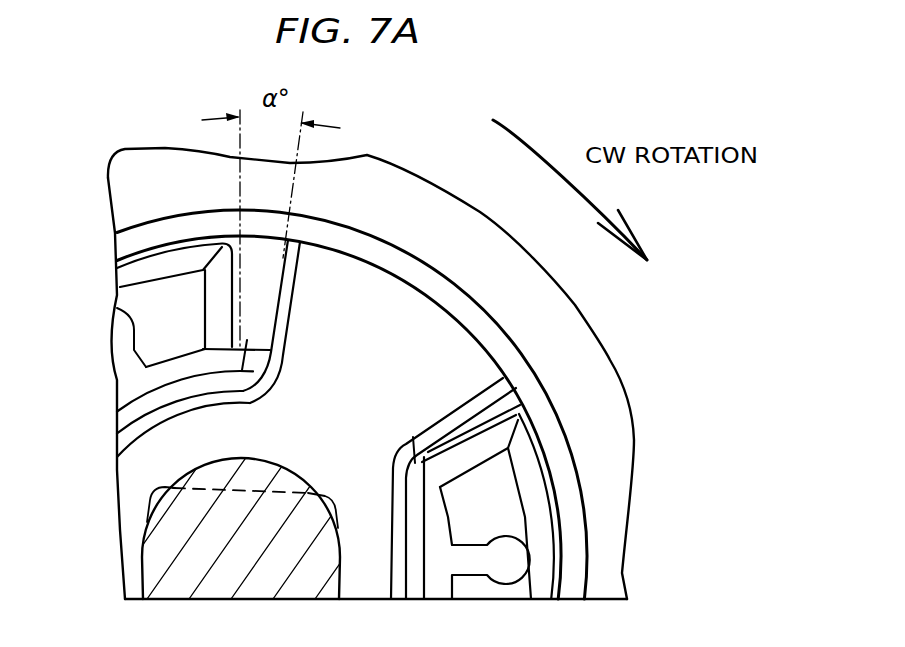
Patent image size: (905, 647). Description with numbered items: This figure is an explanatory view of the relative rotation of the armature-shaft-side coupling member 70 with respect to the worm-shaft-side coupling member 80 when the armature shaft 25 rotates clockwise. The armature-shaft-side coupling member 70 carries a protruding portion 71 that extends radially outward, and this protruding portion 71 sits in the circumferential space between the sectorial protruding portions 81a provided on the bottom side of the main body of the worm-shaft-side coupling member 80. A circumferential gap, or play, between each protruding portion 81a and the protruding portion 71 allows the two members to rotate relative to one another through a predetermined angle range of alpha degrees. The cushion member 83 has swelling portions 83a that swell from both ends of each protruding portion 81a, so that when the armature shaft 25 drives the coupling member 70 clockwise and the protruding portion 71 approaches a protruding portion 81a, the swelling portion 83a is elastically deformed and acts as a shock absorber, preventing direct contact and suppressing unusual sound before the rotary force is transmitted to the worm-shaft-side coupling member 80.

The armature shaft 25 is at (208, 547).
The armature-shaft-side coupling member 70 is at (154, 472).
The protruding portion 71 is at (391, 340).
The worm-shaft-side coupling member 80 is at (549, 458).
The protruding portion 81a is at (158, 301).
The cushion member 83 is at (140, 387).
The swelling portion 83a is at (253, 353).